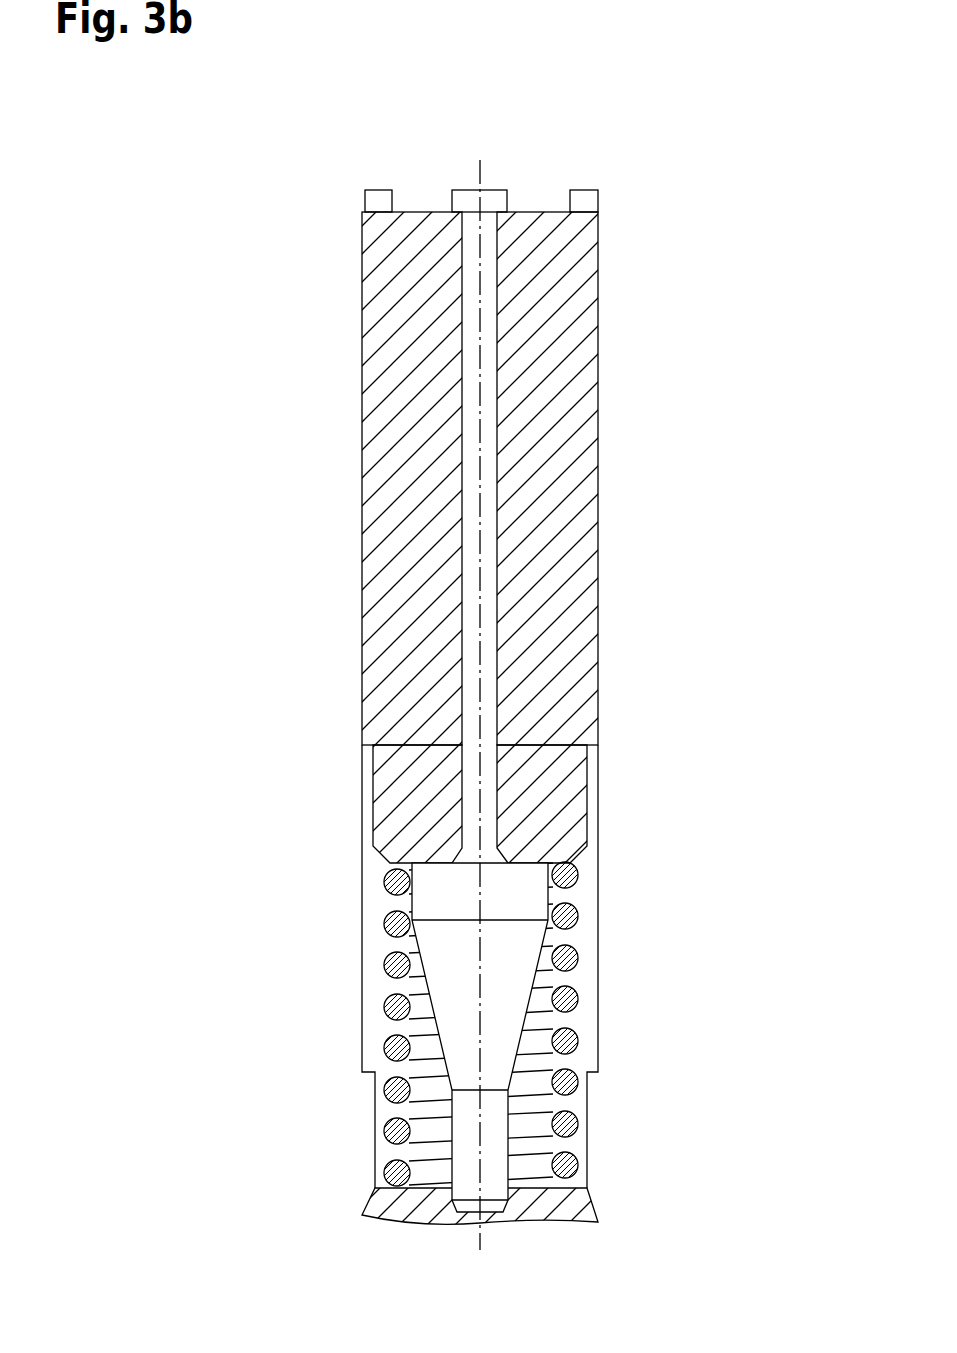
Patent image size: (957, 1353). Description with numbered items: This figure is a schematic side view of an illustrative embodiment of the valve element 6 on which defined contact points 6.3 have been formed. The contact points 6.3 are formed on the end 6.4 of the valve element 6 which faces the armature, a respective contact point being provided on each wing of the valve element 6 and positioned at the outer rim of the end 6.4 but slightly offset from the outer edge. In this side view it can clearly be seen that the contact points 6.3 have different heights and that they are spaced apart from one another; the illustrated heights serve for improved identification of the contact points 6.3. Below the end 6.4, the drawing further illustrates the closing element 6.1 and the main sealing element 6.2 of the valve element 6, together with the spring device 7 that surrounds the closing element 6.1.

The valve element 6 is at (680, 462).
The closing element 6.1 is at (512, 973).
The main sealing element 6.2 is at (498, 1222).
The contact points 6.3 is at (383, 172).
The end of the valve element 6.4 is at (566, 228).
The spring device 7 is at (598, 1052).